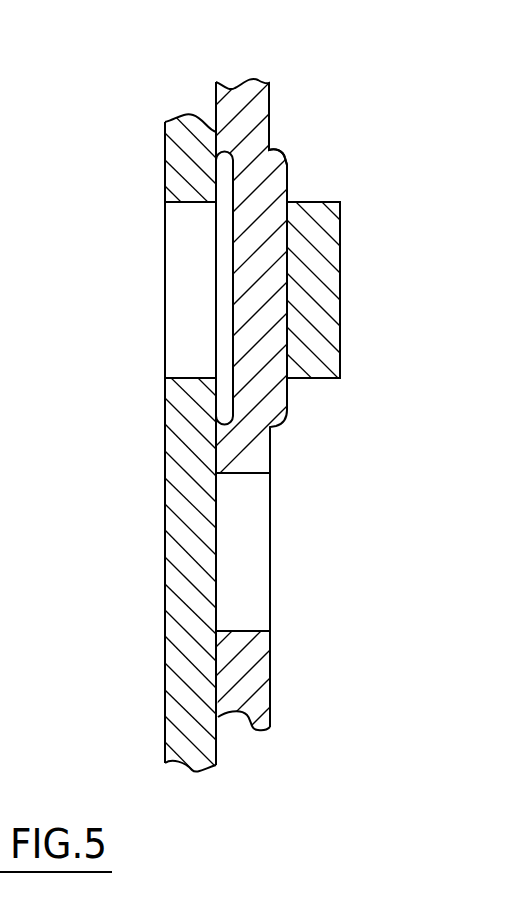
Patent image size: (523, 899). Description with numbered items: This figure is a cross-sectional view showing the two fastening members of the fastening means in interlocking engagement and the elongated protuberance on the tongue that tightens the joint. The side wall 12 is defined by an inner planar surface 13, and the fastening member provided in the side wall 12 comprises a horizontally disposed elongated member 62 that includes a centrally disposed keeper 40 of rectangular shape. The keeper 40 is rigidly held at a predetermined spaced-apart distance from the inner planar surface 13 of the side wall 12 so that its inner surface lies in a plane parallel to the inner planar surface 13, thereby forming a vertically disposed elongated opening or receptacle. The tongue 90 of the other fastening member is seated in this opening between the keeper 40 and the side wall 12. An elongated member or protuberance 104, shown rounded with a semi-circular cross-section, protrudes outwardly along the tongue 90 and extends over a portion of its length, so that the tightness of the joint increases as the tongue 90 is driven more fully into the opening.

The side wall 12 is at (165, 470).
The inner planar surface 13 is at (218, 743).
The keeper 40 is at (320, 378).
The elongated member 62 is at (348, 293).
The tongue 90 is at (269, 113).
The elongated protuberance 104 is at (287, 163).